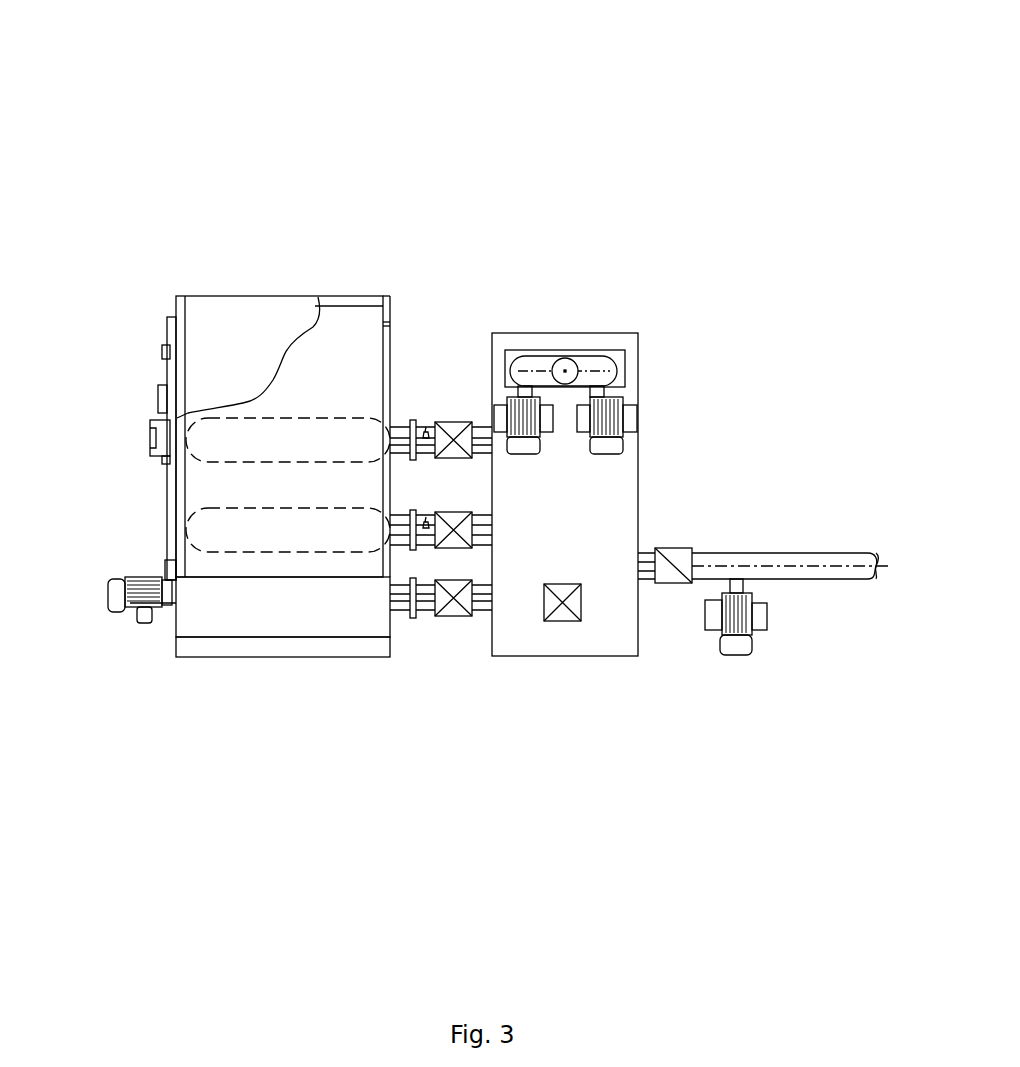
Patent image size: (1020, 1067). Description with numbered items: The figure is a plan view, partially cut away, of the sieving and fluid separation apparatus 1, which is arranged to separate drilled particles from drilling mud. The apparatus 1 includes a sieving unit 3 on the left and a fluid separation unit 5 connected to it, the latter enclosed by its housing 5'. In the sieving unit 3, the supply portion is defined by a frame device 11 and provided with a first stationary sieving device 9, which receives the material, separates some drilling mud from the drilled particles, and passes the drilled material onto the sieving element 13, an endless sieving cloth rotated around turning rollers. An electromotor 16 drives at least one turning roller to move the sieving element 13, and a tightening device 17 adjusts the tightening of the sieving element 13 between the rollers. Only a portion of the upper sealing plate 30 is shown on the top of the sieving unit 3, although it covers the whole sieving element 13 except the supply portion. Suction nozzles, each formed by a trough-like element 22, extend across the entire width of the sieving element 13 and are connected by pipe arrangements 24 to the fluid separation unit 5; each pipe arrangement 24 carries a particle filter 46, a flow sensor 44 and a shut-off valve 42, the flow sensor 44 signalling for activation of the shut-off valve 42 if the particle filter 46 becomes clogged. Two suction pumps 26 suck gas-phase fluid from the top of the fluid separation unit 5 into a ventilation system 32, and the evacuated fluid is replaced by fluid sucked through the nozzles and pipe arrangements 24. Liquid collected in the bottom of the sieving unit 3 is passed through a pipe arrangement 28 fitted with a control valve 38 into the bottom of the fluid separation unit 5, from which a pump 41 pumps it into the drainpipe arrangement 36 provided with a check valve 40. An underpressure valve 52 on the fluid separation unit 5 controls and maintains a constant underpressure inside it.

The sieving and fluid separation apparatus 1 is at (252, 138).
The sieving unit 3 is at (226, 652).
The fluid separation unit 5 is at (658, 582).
The second unit housing 5' is at (658, 456).
The first stationary sieving device 9 is at (283, 647).
The frame device 11 is at (338, 600).
The sieving element 13 is at (347, 353).
The electromotor 16 is at (120, 605).
The tightening device 17 is at (148, 390).
The trough-like element 22 is at (272, 462).
The pipe arrangement 24 is at (404, 397).
The suction pumps 26 is at (530, 445).
The pipe arrangement 28 is at (401, 627).
The upper sealing plate 30 is at (233, 325).
The ventilation system 32 is at (590, 365).
The drainpipe arrangement 36 is at (845, 555).
The control valve 38 is at (455, 618).
The check valve 40 is at (676, 585).
The pump 41 is at (745, 640).
The shut-off valve 42 is at (460, 422).
The flow sensor 44 is at (427, 434).
The particle filter 46 is at (413, 418).
The underpressure valve 52 is at (565, 621).